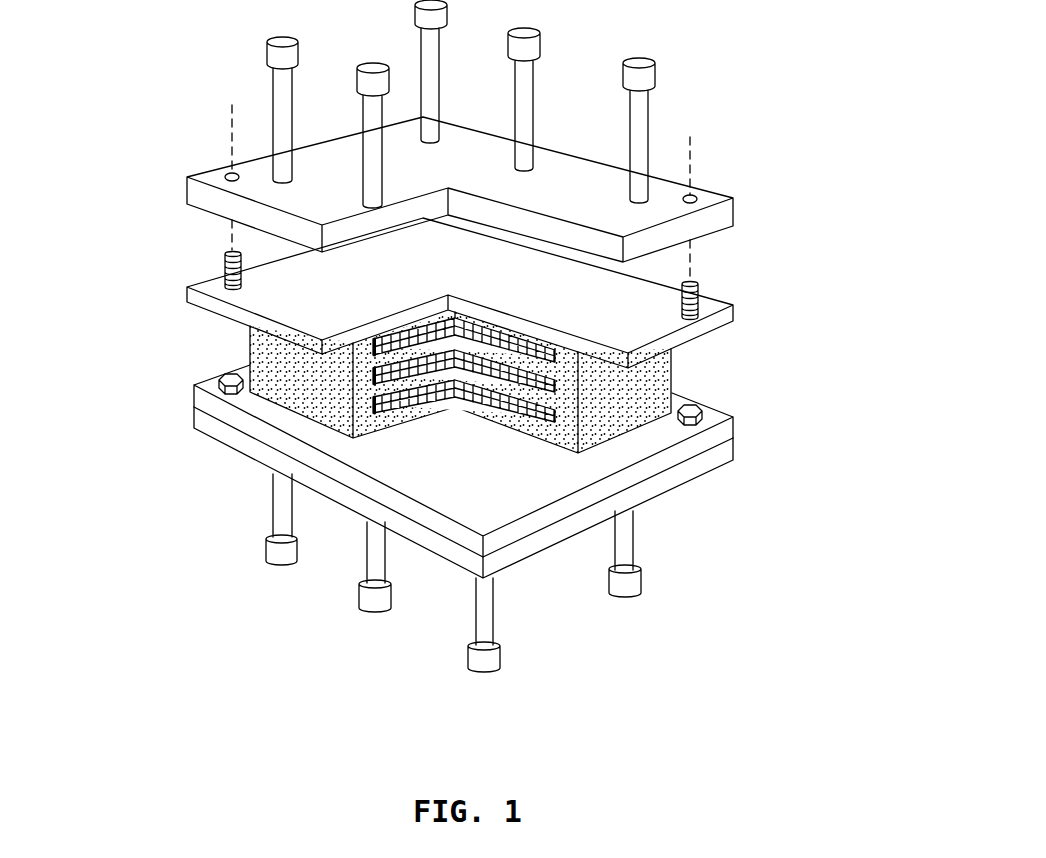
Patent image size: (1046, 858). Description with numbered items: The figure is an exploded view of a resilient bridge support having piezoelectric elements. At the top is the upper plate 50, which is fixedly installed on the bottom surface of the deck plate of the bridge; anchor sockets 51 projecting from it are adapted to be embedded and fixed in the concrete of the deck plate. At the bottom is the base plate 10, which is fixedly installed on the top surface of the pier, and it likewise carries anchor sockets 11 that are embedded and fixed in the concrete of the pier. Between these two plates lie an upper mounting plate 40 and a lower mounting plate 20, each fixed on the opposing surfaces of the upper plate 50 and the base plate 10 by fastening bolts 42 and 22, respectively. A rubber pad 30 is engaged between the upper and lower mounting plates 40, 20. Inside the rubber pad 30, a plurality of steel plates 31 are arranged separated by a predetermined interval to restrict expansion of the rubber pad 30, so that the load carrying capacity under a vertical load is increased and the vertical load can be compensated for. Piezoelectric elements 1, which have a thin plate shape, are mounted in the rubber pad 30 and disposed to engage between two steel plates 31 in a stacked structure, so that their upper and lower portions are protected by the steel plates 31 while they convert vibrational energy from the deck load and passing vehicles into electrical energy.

The piezoelectric element 1 is at (556, 383).
The base plate 10 is at (725, 457).
The anchor socket 11 is at (480, 617).
The lower mounting plate 20 is at (707, 417).
The fastening bolt 22 is at (230, 375).
The rubber pad 30 is at (650, 378).
The steel plate 31 is at (373, 404).
The upper mounting plate 40 is at (707, 307).
The fastening bolt 42 is at (228, 252).
The upper plate 50 is at (718, 213).
The anchor socket 51 is at (637, 110).